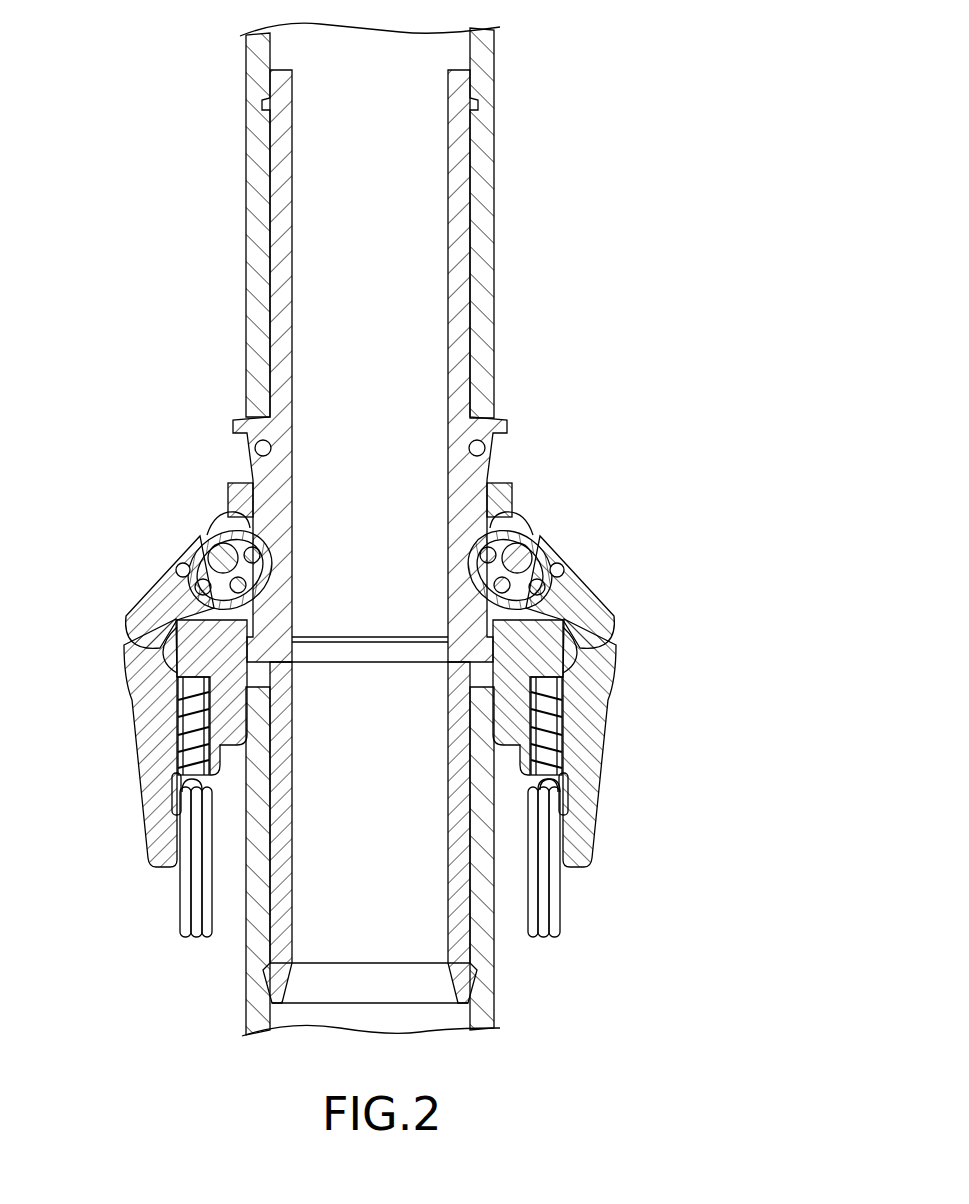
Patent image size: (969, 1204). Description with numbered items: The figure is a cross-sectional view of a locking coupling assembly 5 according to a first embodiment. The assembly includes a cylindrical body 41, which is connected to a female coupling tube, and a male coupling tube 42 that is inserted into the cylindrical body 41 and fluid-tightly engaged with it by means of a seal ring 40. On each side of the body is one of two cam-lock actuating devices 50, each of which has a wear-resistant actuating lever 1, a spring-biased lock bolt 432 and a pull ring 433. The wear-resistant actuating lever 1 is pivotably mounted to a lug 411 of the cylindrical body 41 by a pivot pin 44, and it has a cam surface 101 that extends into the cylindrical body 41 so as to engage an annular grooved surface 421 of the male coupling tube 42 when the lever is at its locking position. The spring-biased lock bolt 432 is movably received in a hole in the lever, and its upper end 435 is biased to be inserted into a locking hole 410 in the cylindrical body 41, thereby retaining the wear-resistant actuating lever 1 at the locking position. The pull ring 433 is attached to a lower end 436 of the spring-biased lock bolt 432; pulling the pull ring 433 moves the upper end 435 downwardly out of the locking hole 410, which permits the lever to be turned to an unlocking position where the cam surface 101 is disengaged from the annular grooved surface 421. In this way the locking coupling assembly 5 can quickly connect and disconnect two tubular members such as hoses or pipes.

The wear-resistant actuating lever 1 is at (612, 632).
The locking coupling assembly 5 is at (617, 513).
The seal ring 40 is at (248, 650).
The cylindrical body 41 is at (232, 488).
The male coupling tube 42 is at (498, 417).
The pivot pin 44 is at (548, 548).
The cam-lock actuating device 50 is at (118, 615).
The cam surface 101 is at (520, 530).
The locking hole 410 is at (573, 613).
The lug 411 is at (512, 528).
The annular grooved surface 421 is at (226, 515).
The spring-biased lock bolt 432 is at (553, 765).
The pull ring 433 is at (565, 912).
The upper end 435 is at (560, 652).
The lower end 436 is at (567, 792).